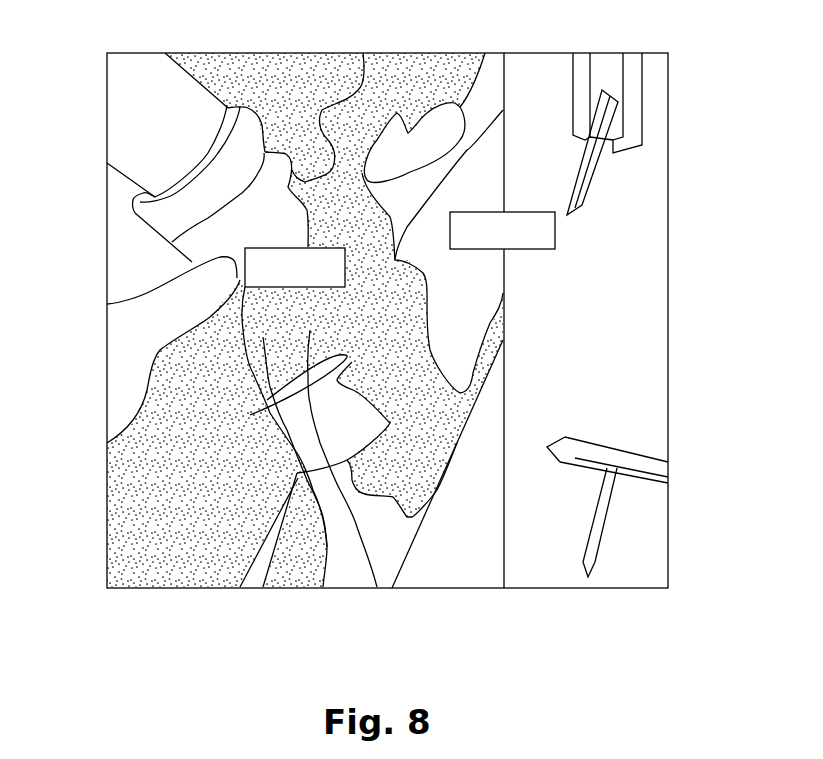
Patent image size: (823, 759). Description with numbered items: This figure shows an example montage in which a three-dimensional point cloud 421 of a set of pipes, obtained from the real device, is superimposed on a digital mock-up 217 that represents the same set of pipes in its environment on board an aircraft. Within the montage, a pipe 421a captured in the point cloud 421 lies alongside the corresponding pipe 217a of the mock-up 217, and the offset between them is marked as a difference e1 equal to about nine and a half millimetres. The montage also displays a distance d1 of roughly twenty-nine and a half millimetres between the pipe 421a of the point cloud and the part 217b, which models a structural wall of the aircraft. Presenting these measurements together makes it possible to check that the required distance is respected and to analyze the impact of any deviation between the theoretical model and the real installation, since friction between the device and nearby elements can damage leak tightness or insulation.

The digital mock-up 217 is at (122, 107).
The pipe of the mock-up 217a is at (323, 588).
The part modelling a structural wall 217b is at (590, 323).
The three-dimensional point cloud 421 is at (343, 163).
The pipe in the point cloud 421a is at (377, 588).
The difference e1 is at (107, 303).
The distance d1 is at (555, 245).